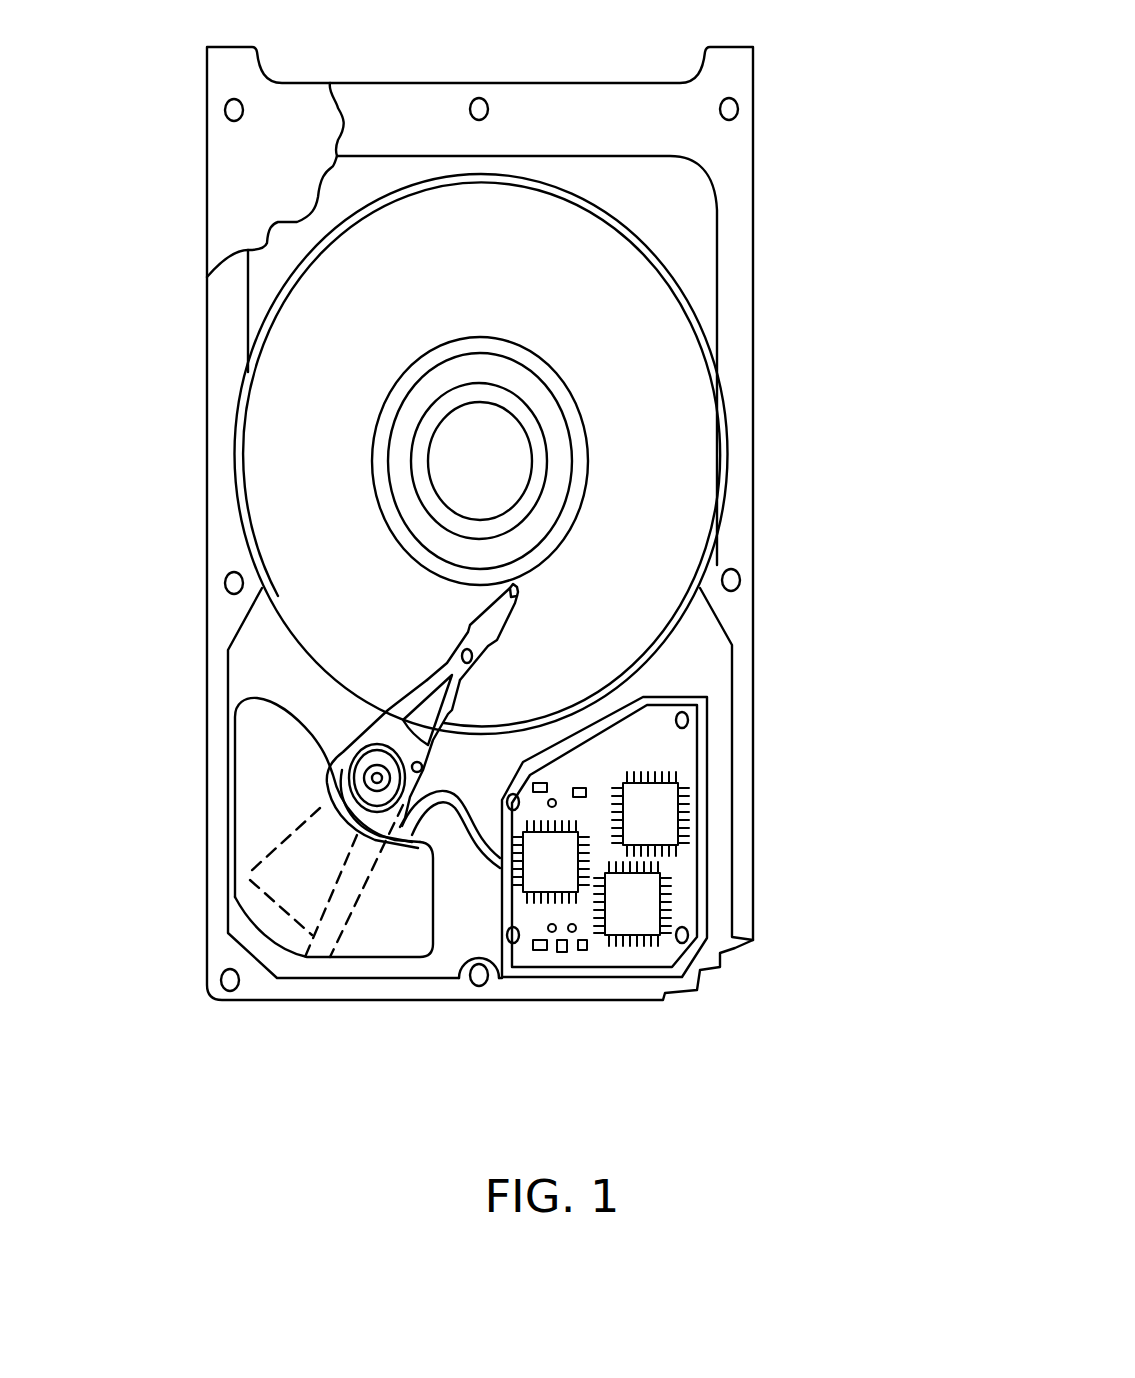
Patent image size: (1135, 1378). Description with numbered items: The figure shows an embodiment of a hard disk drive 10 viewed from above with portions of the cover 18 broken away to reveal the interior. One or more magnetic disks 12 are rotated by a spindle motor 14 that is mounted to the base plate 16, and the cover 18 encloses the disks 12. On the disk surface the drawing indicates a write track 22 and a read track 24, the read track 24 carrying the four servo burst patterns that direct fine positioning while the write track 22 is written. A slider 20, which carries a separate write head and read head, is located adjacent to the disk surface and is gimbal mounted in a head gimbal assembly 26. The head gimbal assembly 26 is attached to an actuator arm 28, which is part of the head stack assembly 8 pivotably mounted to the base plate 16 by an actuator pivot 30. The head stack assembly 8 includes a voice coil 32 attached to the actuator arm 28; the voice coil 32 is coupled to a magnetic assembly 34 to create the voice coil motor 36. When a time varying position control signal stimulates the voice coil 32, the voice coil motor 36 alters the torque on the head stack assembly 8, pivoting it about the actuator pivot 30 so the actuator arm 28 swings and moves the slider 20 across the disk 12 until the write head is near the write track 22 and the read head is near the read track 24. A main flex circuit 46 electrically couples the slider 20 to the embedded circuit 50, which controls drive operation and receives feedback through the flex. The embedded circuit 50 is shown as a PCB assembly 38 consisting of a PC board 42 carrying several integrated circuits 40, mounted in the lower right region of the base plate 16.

The hard disk drive 10 is at (483, 79).
The cover 18 is at (233, 167).
The base plate 16 is at (700, 258).
The magnetic disk 12 is at (503, 287).
The write track 22 is at (565, 385).
The spindle motor 14 is at (485, 457).
The read track 24 is at (558, 405).
The slider 20 is at (517, 587).
The head gimbal assembly 26 is at (488, 623).
The actuator arm 28 is at (390, 732).
The actuator pivot 30 is at (375, 777).
The head stack assembly 8 is at (283, 820).
The voice coil motor 36 is at (223, 866).
The voice coil 32 is at (312, 952).
The magnetic assembly 34 is at (388, 940).
The main flex circuit 46 is at (456, 833).
The PC board 42 is at (672, 754).
The PCB assembly 38 is at (706, 847).
The integrated circuits 40 is at (620, 908).
The embedded circuit 50 is at (722, 980).